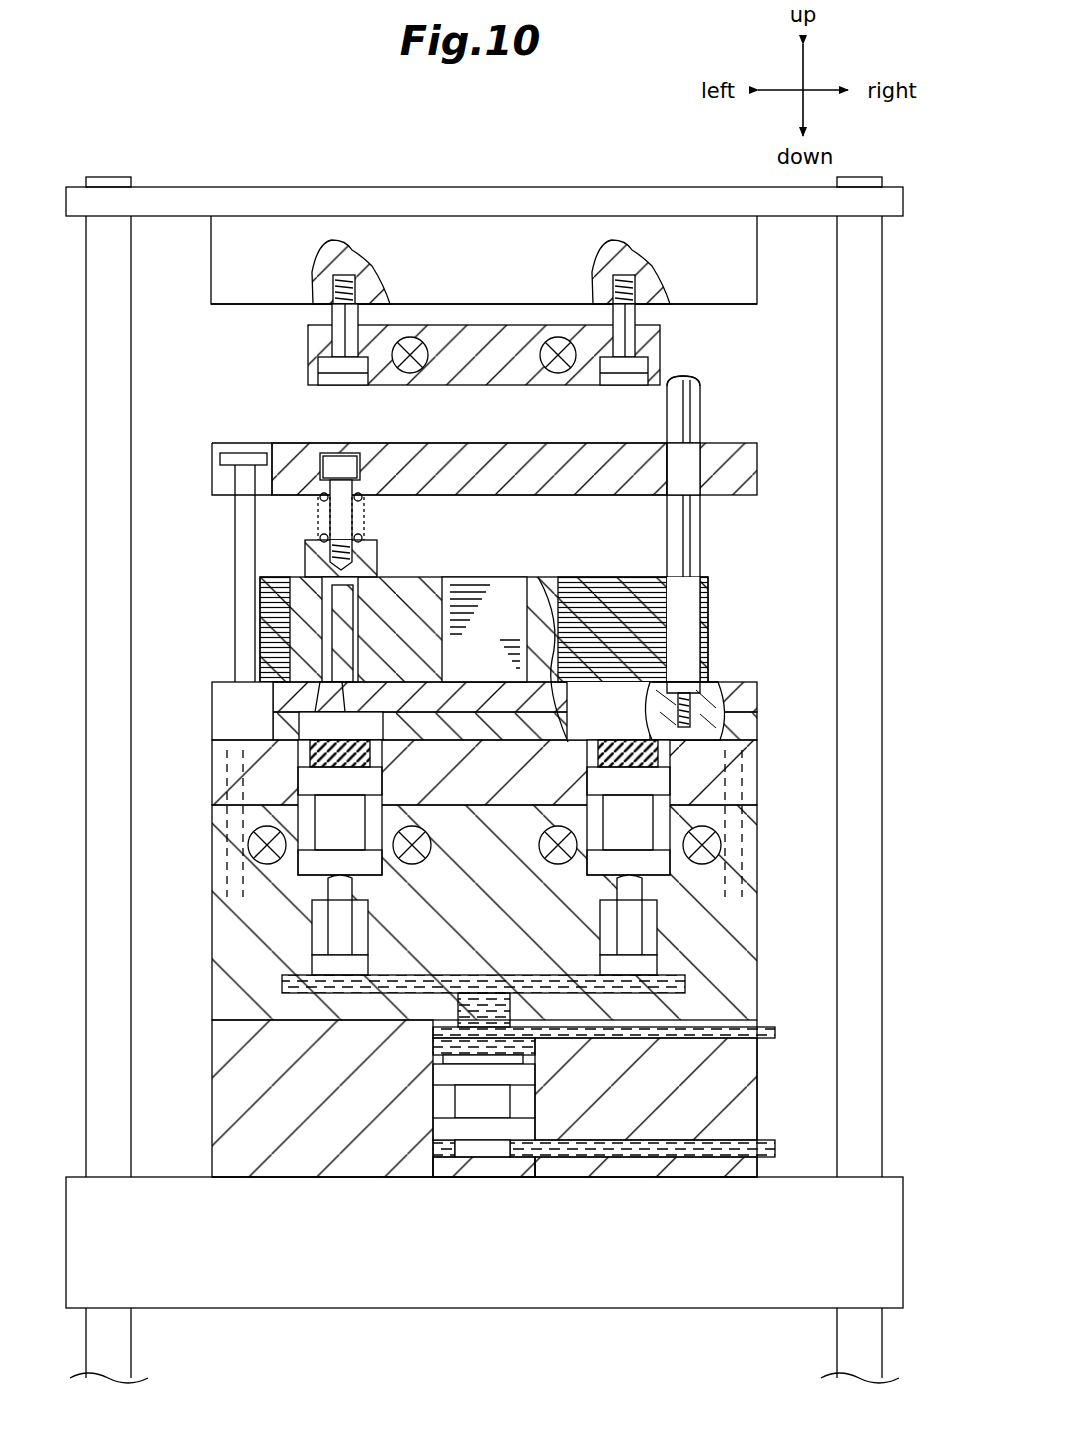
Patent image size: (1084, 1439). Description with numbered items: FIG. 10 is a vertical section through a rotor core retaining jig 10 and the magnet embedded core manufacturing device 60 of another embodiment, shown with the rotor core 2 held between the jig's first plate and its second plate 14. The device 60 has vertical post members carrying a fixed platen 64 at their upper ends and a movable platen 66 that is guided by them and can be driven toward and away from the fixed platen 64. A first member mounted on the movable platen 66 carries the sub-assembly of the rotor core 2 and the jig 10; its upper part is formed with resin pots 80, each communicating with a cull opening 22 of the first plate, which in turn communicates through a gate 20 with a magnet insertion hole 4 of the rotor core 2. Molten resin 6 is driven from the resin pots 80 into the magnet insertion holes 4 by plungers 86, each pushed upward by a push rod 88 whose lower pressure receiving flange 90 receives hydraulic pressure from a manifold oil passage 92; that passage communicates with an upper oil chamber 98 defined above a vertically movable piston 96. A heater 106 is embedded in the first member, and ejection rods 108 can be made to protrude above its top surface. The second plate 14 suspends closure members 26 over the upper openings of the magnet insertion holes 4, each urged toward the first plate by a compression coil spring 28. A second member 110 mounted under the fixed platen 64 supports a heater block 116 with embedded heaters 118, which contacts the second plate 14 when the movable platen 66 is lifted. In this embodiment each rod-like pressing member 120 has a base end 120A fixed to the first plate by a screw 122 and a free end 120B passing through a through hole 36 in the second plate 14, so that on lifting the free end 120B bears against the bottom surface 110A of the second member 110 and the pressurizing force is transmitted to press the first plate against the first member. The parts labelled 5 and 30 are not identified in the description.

The rotor core 2 is at (545, 576).
The magnet insertion holes 4 is at (325, 612).
The punch 5 is at (345, 640).
The resin 6 is at (370, 755).
The rotor core retaining jig 10 is at (748, 422).
The second plate 14 is at (512, 490).
The gates 20 is at (325, 695).
The cull openings 22 is at (322, 728).
The closure members 26 is at (315, 558).
The compression coil spring 28 is at (365, 493).
The guide pin 30 is at (245, 523).
The through hole 36 is at (690, 465).
The magnet embedded core manufacturing device 60 is at (888, 320).
The fixed platen 64 is at (289, 205).
The movable platen 66 is at (597, 1295).
The resin pots 80 is at (300, 758).
The plunger 86 is at (318, 780).
The push rod 88 is at (340, 930).
The pressure receiving flange 90 is at (322, 963).
The manifold oil passage 92 is at (475, 985).
The piston 96 is at (463, 1100).
The upper oil chamber 98 is at (510, 1048).
The heater 106 is at (263, 858).
The ejection rods 108 is at (755, 822).
The second member 110 is at (680, 232).
The bottom surface 110A is at (757, 306).
The heater block 116 is at (512, 340).
The heaters 118 is at (558, 369).
The pressing member 120 is at (680, 553).
The base end 120A is at (690, 705).
The free end 120B is at (690, 380).
The screw 122 is at (680, 690).